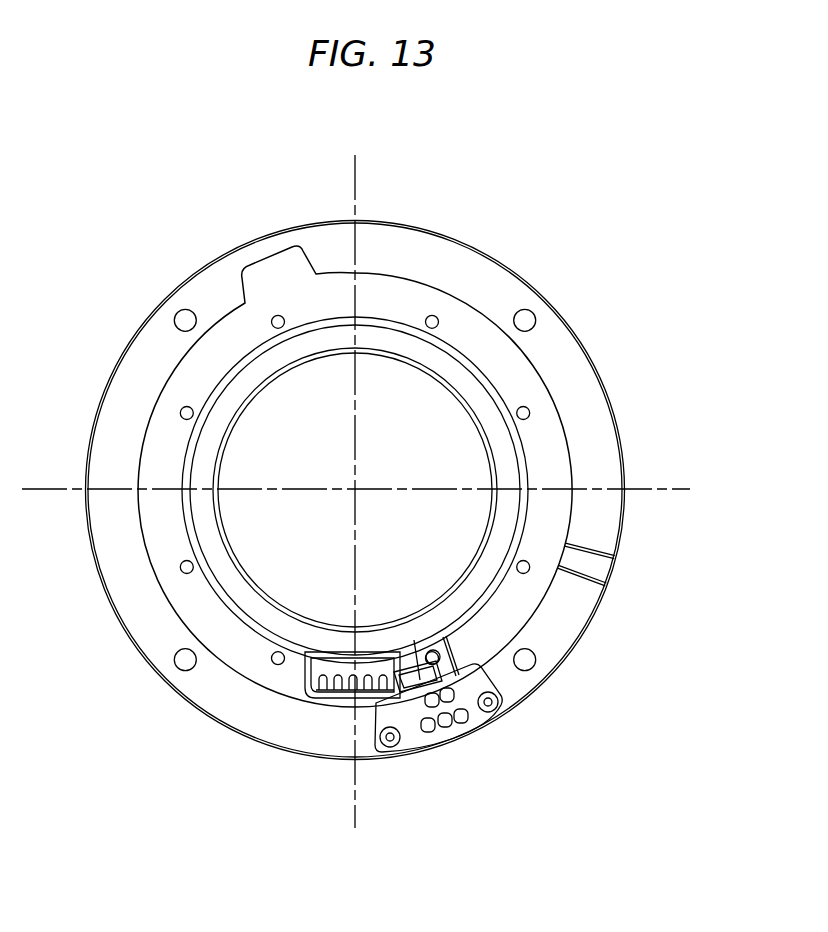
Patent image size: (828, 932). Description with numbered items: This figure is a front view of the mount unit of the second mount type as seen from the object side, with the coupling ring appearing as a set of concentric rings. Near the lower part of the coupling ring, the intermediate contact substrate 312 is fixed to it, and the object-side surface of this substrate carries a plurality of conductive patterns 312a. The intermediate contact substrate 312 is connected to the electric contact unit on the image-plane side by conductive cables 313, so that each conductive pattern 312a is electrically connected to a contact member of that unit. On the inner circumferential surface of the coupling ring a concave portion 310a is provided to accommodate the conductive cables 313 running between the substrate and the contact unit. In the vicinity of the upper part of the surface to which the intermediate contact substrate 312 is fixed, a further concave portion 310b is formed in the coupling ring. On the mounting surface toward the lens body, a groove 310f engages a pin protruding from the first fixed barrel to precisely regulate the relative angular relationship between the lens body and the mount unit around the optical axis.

The concave portion 310a is at (460, 650).
The concave portion 310b is at (268, 262).
The groove 310f is at (592, 565).
The intermediate contact substrate 312 is at (477, 684).
The conductive pattern 312a is at (447, 733).
The conductive cables 313 is at (322, 698).